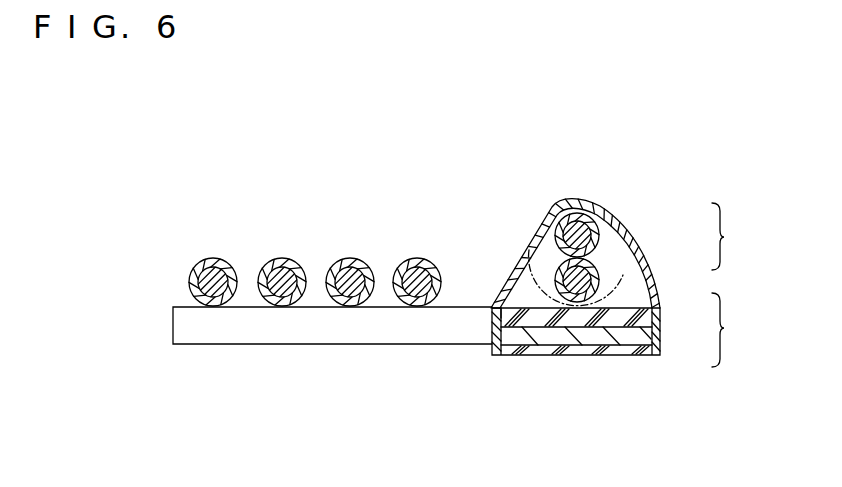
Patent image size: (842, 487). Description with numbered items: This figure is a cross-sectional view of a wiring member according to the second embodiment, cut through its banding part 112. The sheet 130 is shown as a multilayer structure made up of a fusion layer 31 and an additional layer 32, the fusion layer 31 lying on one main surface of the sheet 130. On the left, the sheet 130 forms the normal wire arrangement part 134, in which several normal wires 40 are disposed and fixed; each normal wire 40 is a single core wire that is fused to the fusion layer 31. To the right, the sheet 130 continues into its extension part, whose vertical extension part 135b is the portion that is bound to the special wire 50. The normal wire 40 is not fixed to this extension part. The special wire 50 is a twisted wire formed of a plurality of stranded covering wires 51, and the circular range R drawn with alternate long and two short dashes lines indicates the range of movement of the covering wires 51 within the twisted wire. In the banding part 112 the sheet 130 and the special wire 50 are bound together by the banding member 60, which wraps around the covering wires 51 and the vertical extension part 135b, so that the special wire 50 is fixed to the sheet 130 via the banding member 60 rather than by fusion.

The normal wire 40 is at (258, 266).
The normal wire arrangement part 134 is at (312, 347).
The vertical extension part 135b is at (512, 305).
The banding part 112 is at (609, 334).
The fusion layer 31 is at (641, 320).
The additional layer 32 is at (645, 350).
The sheet 130 is at (736, 330).
The banding member 60 is at (605, 206).
The covering wire 51 is at (603, 238).
The special wire 50 is at (730, 236).
The circular range R is at (613, 293).